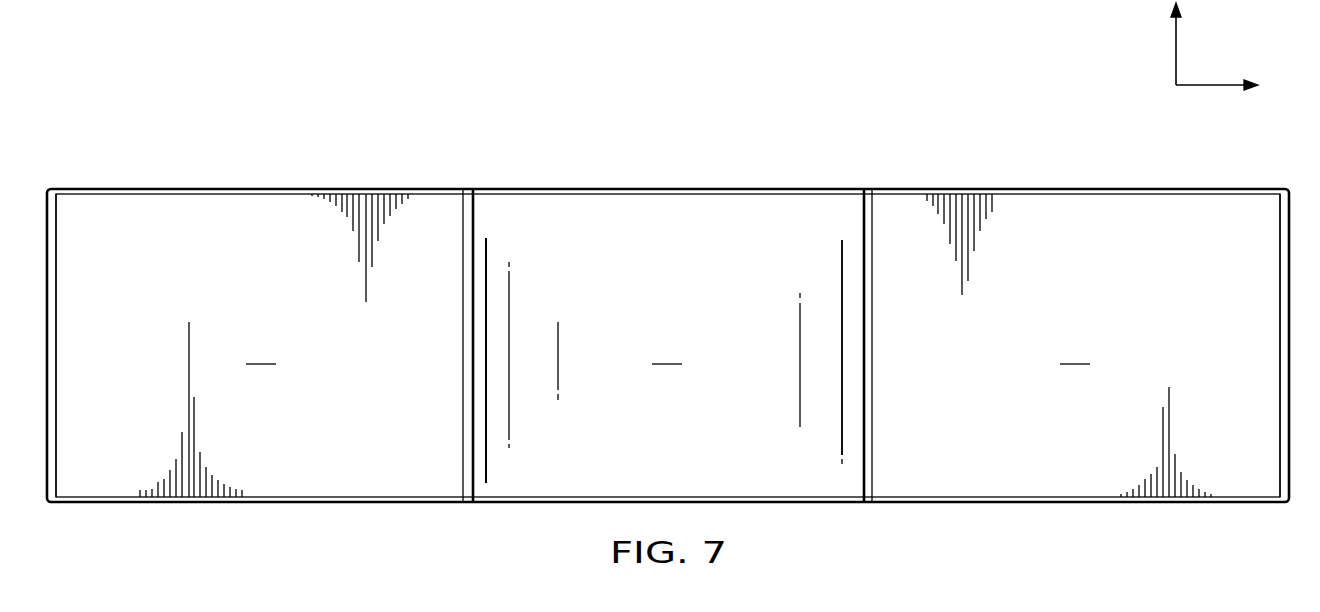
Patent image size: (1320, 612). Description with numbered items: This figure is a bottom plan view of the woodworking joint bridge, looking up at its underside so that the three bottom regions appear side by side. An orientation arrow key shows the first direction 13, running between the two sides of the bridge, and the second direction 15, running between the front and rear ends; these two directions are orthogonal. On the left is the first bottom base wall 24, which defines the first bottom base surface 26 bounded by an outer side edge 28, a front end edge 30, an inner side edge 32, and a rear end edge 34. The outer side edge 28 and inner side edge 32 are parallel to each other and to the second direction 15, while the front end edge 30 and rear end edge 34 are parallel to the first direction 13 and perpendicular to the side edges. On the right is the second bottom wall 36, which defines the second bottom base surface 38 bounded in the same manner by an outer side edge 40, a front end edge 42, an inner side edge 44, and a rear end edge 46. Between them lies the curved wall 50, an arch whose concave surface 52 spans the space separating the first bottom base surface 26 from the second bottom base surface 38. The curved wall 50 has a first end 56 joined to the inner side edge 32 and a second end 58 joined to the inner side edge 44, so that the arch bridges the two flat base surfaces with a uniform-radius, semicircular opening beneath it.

The first direction 13 is at (1211, 85).
The second direction 15 is at (1176, 50).
The first bottom base wall 24 is at (303, 480).
The first bottom base surface 26 is at (261, 347).
The outer side edge 28 is at (56, 345).
The front end edge 30 is at (212, 195).
The inner side edge 32 is at (463, 345).
The rear end edge 34 is at (380, 497).
The second bottom wall 36 is at (1032, 483).
The second bottom base surface 38 is at (1075, 347).
The outer side edge 40 is at (1280, 345).
The front end edge 42 is at (1125, 195).
The inner side edge 44 is at (873, 345).
The rear end edge 46 is at (957, 497).
The curved wall 50 is at (556, 483).
The concave surface 52 is at (675, 352).
The first end 56 is at (474, 233).
The second end 58 is at (863, 232).